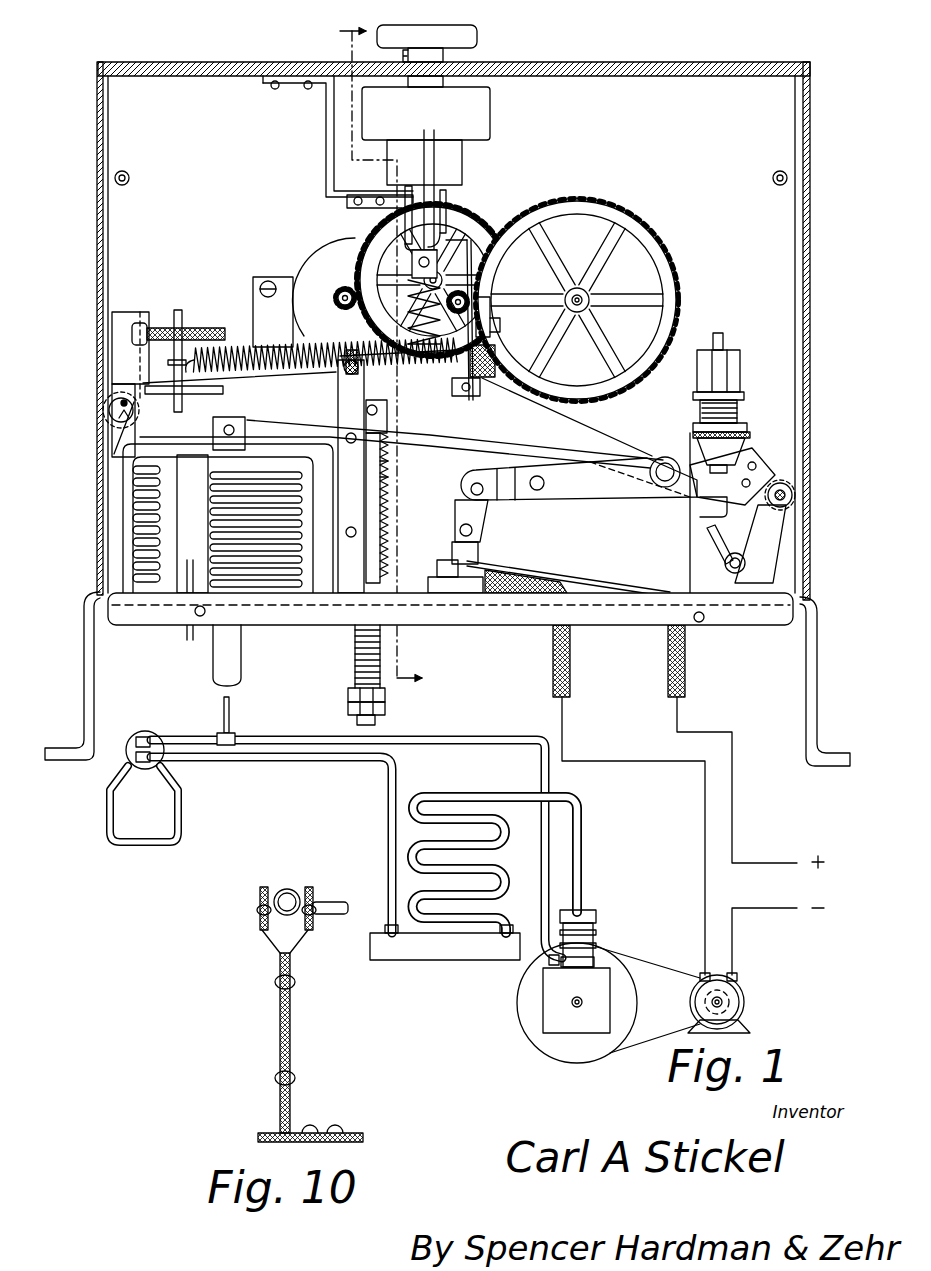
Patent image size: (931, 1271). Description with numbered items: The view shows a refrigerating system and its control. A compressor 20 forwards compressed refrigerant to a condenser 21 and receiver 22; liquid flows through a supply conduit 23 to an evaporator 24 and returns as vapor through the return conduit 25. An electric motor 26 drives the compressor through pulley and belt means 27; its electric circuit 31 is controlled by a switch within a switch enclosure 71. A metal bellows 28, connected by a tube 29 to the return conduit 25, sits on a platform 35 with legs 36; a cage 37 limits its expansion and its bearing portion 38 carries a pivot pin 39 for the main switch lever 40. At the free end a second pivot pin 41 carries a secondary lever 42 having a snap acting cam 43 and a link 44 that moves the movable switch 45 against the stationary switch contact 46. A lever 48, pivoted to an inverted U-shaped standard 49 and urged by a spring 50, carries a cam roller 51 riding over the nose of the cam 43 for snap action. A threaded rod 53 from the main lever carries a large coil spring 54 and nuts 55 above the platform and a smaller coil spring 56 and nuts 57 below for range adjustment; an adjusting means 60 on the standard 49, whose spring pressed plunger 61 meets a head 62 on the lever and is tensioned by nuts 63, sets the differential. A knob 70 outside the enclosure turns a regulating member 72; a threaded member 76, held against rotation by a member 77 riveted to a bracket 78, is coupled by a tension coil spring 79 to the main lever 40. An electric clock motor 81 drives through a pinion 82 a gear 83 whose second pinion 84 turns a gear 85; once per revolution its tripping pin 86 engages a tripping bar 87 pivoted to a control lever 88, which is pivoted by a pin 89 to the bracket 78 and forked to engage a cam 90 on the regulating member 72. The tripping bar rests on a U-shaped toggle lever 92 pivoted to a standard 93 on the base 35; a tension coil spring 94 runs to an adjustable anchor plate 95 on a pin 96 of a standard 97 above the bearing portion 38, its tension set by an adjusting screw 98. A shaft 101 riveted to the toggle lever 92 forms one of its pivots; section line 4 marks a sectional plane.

In FIG. 1, the section line 4- 4 is at (376, 360).
In FIG. 1, the compressor 20 is at (597, 916).
In FIG. 1, the condenser 21 is at (424, 836).
In FIG. 1, the receiver 22 is at (432, 952).
In FIG. 1, the supply conduit 23 is at (334, 762).
In FIG. 1, the evaporator 24 is at (180, 812).
In FIG. 1, the return conduit 25 is at (446, 741).
In FIG. 1, the electric motor 26 is at (746, 998).
In FIG. 1, the pulley and belt means 27 is at (649, 963).
In FIG. 1, the metal bellows 28 is at (134, 512).
In FIG. 1, the tube 29 is at (242, 660).
In FIG. 1, the electric circuit 31 is at (768, 866).
In FIG. 1, the platform 35 is at (178, 620).
In FIG. 10, the platform 35 is at (356, 1133).
In FIG. 1, the legs 36 is at (90, 664).
In FIG. 1, the cage 37 is at (190, 642).
In FIG. 1, the bearing portion 38 is at (124, 438).
In FIG. 1, the pivot pin 39 is at (118, 412).
In FIG. 1, the main switch lever 40 is at (452, 428).
In FIG. 1, the second pivot pin 41 is at (659, 460).
In FIG. 1, the secondary lever 42 is at (587, 498).
In FIG. 1, the snap acting cam 43 is at (762, 456).
In FIG. 1, the link 44 is at (480, 530).
In FIG. 1, the movable switch 45 is at (480, 565).
In FIG. 1, the stationary switch contact 46 is at (430, 582).
In FIG. 1, the lever 48 is at (790, 536).
In FIG. 1, the inverted U-shaped standard 49 is at (724, 560).
In FIG. 1, the spring 50 is at (708, 536).
In FIG. 1, the cam roller 51 is at (796, 492).
In FIG. 1, the threaded rod 53 is at (390, 462).
In FIG. 1, the large coil spring 54 is at (390, 522).
In FIG. 1, the nuts 55 is at (390, 478).
In FIG. 1, the smaller coil spring 56 is at (354, 660).
In FIG. 1, the nuts 57 is at (350, 700).
In FIG. 1, the adjusting means 60 is at (740, 414).
In FIG. 1, the spring pressed plunger 61 is at (724, 340).
In FIG. 1, the head 62 is at (702, 456).
In FIG. 1, the nuts 63 is at (740, 372).
In FIG. 1, the knob 70 is at (470, 40).
In FIG. 1, the switch enclosure 71 is at (634, 72).
In FIG. 1, the regulating member 72 is at (96, 345).
In FIG. 1, the threaded member 76 is at (440, 190).
In FIG. 1, the member 77 is at (347, 200).
In FIG. 1, the bracket 78 is at (326, 112).
In FIG. 1, the tension coil spring 79 is at (406, 300).
In FIG. 1, the electric clock motor 81 is at (296, 280).
In FIG. 1, the pinion 82 is at (342, 296).
In FIG. 1, the gear 83 is at (478, 190).
In FIG. 1, the second pinion 84 is at (467, 250).
In FIG. 1, the gear 85 is at (598, 196).
In FIG. 1, the tripping pin 86 is at (470, 300).
In FIG. 1, the tripping bar 87 is at (490, 312).
In FIG. 1, the control lever 88 is at (490, 330).
In FIG. 1, the pin 89 is at (405, 226).
In FIG. 1, the cam 90 is at (490, 112).
In FIG. 1, the U-shaped toggle lever 92 is at (484, 380).
In FIG. 10, the U-shaped toggle lever 92 is at (262, 887).
In FIG. 1, the standard 93 is at (338, 403).
In FIG. 10, the standard 93 is at (291, 1016).
In FIG. 1, the tension coil spring 94 is at (240, 345).
In FIG. 10, the tension coil spring 94 is at (289, 889).
In FIG. 1, the adjustable anchor plate 95 is at (177, 310).
In FIG. 1, the pin 96 is at (207, 395).
In FIG. 1, the standard 97 is at (120, 358).
In FIG. 1, the adjusting screw 98 is at (150, 327).
In FIG. 10, the shaft 101 is at (336, 902).